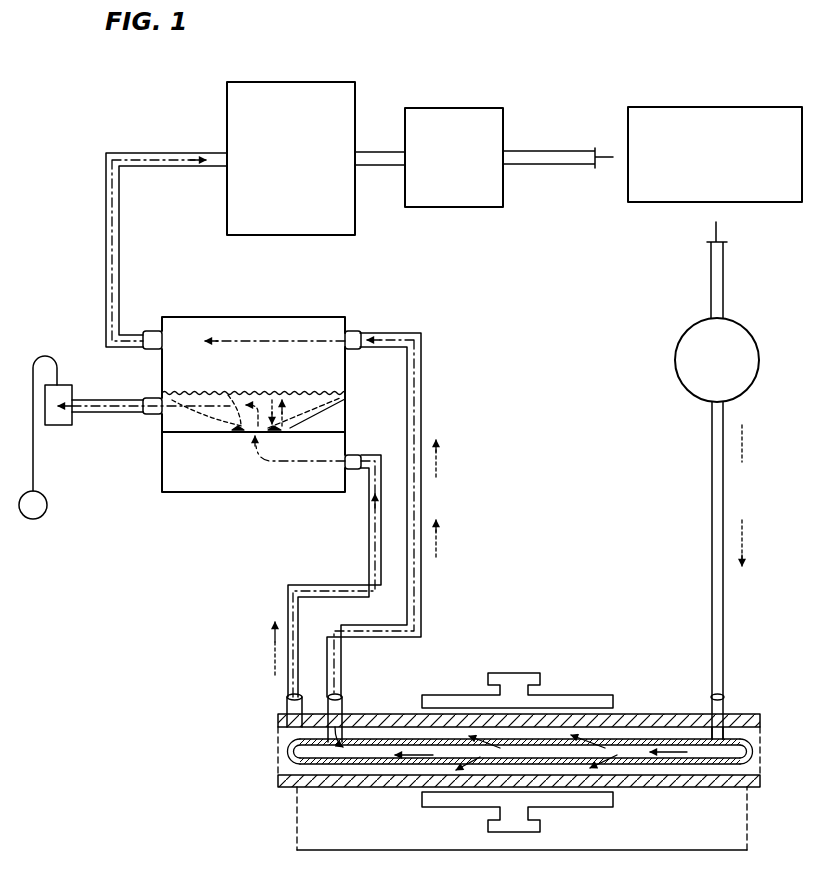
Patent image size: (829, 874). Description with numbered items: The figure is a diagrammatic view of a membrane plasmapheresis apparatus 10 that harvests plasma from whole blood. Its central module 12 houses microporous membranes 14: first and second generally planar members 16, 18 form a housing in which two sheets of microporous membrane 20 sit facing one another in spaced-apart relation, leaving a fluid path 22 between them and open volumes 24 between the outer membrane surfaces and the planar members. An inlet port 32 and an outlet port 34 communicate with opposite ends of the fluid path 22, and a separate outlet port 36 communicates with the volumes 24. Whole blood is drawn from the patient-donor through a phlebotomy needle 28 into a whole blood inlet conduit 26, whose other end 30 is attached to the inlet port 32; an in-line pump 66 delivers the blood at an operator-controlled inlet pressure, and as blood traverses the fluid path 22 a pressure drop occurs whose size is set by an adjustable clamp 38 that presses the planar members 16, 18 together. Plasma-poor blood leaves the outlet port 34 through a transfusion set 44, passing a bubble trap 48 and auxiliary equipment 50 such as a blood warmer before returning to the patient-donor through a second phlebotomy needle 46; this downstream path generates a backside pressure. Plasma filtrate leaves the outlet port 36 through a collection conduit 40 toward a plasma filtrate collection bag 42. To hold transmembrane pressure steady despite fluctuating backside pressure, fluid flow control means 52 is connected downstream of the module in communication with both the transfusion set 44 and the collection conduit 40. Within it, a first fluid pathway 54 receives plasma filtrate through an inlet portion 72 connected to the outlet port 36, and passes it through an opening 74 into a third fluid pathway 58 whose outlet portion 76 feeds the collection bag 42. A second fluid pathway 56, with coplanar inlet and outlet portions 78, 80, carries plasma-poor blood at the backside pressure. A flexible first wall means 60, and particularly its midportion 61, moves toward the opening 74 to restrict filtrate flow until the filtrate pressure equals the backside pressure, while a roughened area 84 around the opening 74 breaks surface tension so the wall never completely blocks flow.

The membrane plasmapheresis apparatus 10 is at (499, 392).
The module 12 is at (510, 760).
The microporous membranes 14 is at (549, 735).
The first planar member 16 is at (379, 722).
The second planar member 18 is at (366, 781).
The microporous membrane sheets 20 is at (418, 744).
The fluid path 22 is at (356, 752).
The open volumes 24 is at (398, 736).
The whole blood inlet conduit 26 is at (716, 420).
The phlebotomy needle 28 is at (720, 230).
The other end of conduit 30 is at (728, 697).
The inlet port 32 is at (735, 713).
The outlet port 34 is at (330, 696).
The outlet port 36 is at (283, 712).
The adjustable clamp 38 is at (520, 683).
The collection conduit 40 is at (118, 413).
The plasma filtrate collection bag 42 is at (53, 428).
The transfusion set 44 is at (160, 160).
The phlebotomy needle 46 is at (590, 150).
The bubble trap 48 is at (466, 115).
The auxiliary equipment 50 is at (315, 93).
The fluid flow control means 52 is at (254, 398).
The first fluid pathway 54 is at (229, 478).
The second fluid pathway 56 is at (275, 325).
The third fluid pathway 58 is at (182, 413).
The flexible first wall means 60 is at (268, 393).
The midportion 61 is at (236, 400).
The in-line pump 66 is at (744, 346).
The inlet portion 72 is at (355, 455).
The opening 74 is at (252, 436).
The outlet portion 76 is at (158, 415).
The inlet portion 78 is at (355, 332).
The outlet portion 80 is at (151, 330).
The roughened area 84 is at (305, 421).